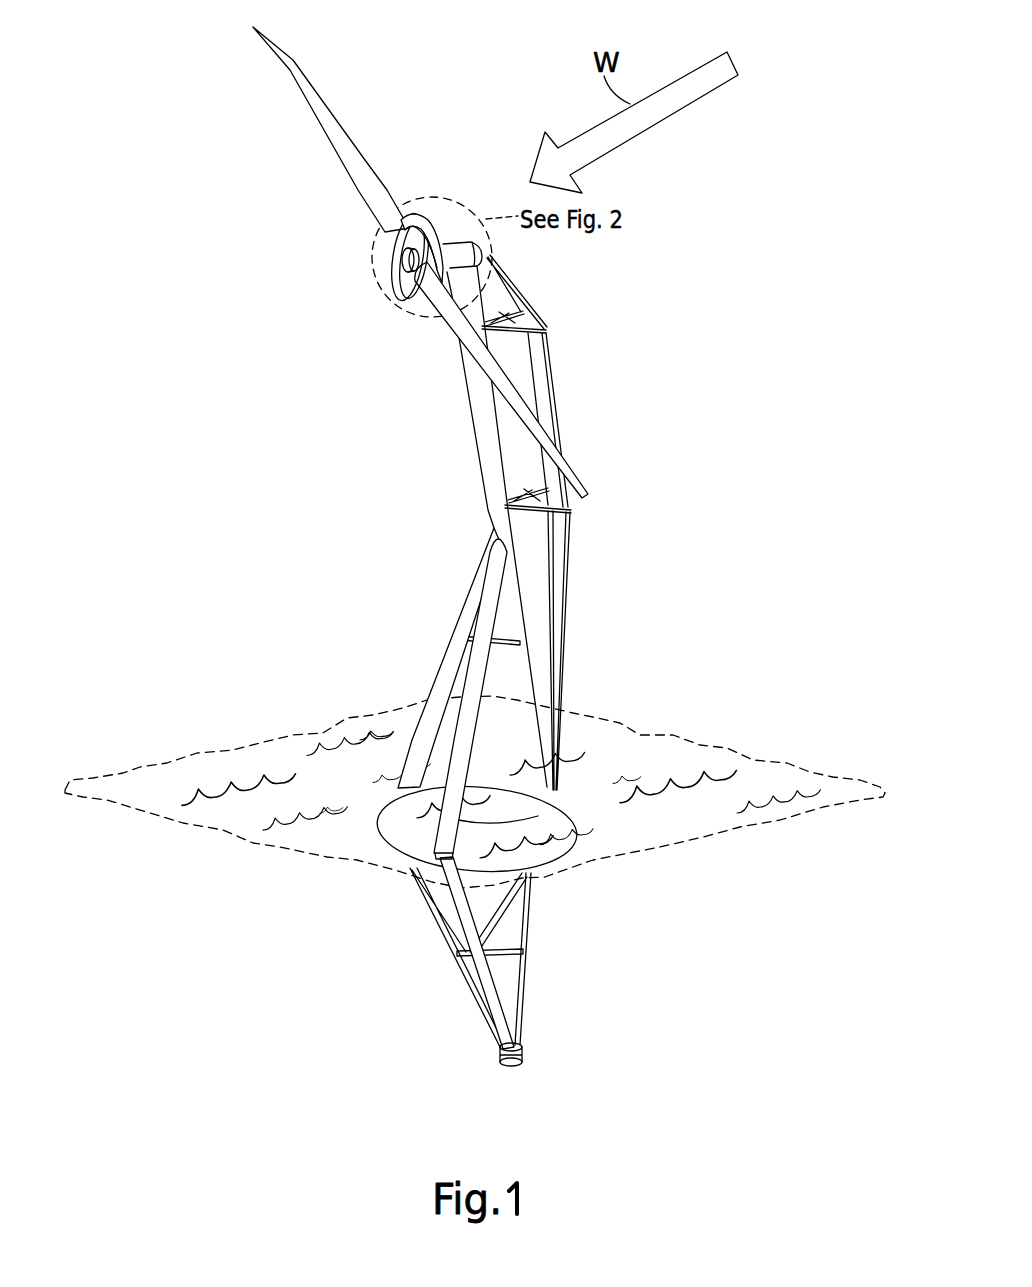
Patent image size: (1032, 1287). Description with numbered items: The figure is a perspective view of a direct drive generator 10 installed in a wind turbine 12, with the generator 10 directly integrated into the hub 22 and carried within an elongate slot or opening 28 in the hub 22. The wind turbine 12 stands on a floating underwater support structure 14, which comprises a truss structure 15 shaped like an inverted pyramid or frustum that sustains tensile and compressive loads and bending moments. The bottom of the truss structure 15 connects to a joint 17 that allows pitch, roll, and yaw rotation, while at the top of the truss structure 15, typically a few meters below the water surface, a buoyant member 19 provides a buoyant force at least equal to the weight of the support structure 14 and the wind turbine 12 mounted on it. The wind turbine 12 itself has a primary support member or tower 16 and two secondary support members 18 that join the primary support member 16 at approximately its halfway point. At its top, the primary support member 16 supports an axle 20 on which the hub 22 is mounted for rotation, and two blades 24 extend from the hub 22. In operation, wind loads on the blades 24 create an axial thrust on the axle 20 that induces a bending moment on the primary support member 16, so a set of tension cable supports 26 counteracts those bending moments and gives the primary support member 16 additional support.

The direct drive generator 10 is at (426, 206).
The wind turbine 12 is at (496, 557).
The floating underwater support structure 14 is at (483, 934).
The truss structure 15 is at (577, 857).
The primary support member 16 is at (523, 621).
The joint 17 is at (500, 1062).
The secondary support members 18 is at (443, 673).
The buoyant member 19 is at (390, 840).
The axle 20 is at (406, 258).
The hub 22 is at (396, 238).
The blades 24 is at (355, 162).
The tension cable supports 26 is at (553, 390).
The elongate slot or opening 28 is at (404, 290).